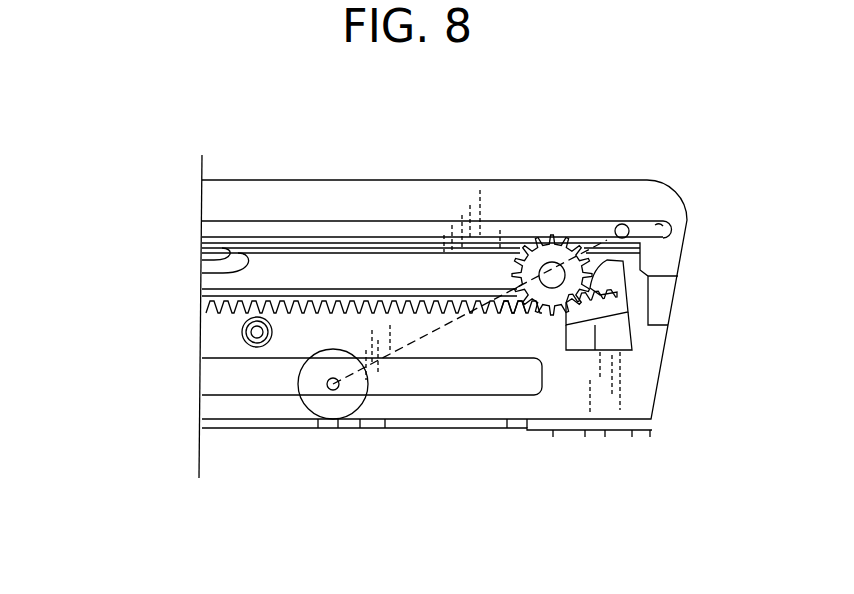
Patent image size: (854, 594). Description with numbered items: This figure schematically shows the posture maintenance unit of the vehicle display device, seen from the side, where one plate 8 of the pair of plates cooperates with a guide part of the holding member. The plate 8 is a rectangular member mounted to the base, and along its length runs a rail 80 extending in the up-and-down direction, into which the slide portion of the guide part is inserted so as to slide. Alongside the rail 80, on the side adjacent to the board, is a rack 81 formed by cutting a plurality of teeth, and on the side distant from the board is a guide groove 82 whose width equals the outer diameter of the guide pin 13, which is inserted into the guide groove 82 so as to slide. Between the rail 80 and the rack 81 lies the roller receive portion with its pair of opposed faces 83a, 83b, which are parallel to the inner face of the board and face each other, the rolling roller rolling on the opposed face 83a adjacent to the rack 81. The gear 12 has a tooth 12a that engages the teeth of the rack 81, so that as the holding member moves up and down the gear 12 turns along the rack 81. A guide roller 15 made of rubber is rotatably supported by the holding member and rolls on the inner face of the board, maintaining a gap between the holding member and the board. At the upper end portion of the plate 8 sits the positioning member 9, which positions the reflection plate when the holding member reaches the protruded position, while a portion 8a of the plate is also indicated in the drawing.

The plate 8 is at (690, 212).
The engaging portion of housing 8a is at (521, 313).
The positioning member 9 is at (638, 330).
The gear 12 is at (556, 236).
The tooth 12a is at (588, 250).
The guide pin 13 is at (625, 224).
The guide roller 15 is at (348, 403).
The rail 80 is at (202, 273).
The rack 81 is at (486, 298).
The guide groove 82 is at (663, 221).
The opposed face 83a is at (202, 287).
The opposed face 83b is at (202, 258).